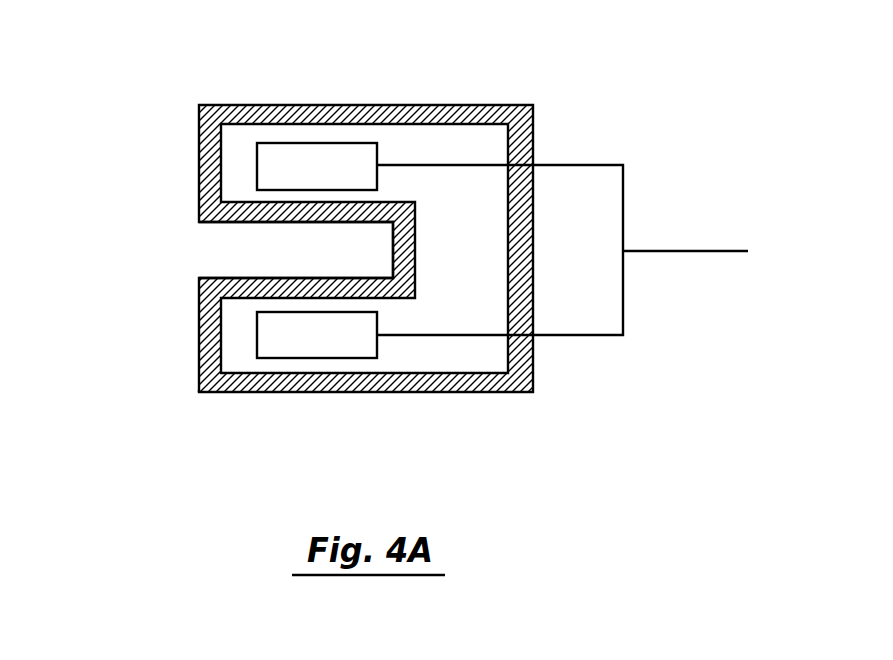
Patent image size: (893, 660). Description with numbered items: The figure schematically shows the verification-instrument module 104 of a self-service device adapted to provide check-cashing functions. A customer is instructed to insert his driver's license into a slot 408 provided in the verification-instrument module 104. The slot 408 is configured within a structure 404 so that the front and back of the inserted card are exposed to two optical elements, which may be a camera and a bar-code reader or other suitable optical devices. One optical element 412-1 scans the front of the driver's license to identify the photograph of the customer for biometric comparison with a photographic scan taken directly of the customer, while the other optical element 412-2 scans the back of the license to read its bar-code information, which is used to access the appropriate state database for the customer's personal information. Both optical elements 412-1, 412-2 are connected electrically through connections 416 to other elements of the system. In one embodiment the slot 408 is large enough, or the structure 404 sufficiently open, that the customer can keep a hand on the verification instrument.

The verification-instrument module 104 is at (203, 405).
The structure 404 is at (407, 107).
The slot 408 is at (250, 251).
The optical element 412-1 is at (321, 168).
The optical element 412-2 is at (297, 340).
The connections 416 is at (623, 192).